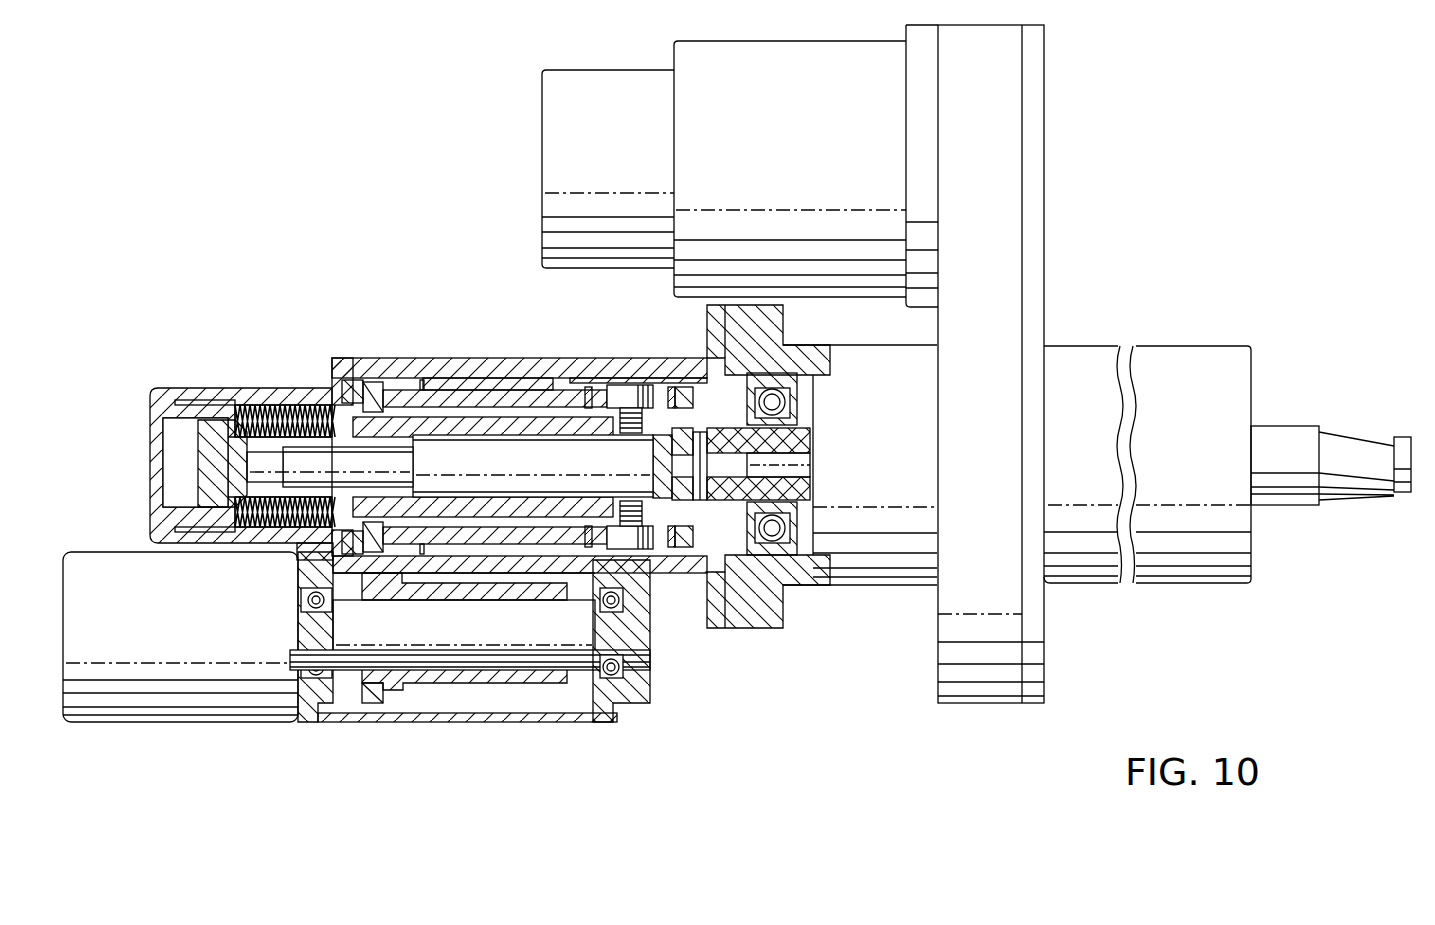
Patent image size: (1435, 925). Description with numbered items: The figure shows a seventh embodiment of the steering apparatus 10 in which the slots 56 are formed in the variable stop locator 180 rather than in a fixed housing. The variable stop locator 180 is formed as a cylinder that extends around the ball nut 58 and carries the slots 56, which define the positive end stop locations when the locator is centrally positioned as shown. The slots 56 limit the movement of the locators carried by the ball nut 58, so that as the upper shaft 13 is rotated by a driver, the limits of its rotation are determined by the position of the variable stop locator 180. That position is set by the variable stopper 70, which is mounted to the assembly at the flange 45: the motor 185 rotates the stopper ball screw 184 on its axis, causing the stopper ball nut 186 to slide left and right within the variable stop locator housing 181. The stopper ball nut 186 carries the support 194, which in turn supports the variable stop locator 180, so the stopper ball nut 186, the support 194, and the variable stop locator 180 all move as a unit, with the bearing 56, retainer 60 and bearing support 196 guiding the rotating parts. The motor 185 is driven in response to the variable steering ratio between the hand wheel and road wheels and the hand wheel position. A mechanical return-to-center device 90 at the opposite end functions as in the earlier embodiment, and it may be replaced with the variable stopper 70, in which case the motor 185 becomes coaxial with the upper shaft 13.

The spindle drive assembly 10 is at (1232, 204).
The upper shaft 13 is at (1274, 439).
The mounting flange 45 is at (1049, 166).
The slots 56 is at (662, 395).
The ball nut 58 is at (518, 425).
The bearing retainer 60 is at (623, 392).
The variable stopper 70 is at (431, 793).
The mechanical return-to-center device 90 is at (259, 378).
The variable stop locator 180 is at (398, 392).
The variable stop locator housing 181 is at (308, 712).
The stopper ball screw 184 is at (512, 652).
The motor 185 is at (162, 710).
The stopper ball nut 186 is at (445, 677).
The support 194 is at (372, 698).
The motor bearing support 196 is at (547, 553).